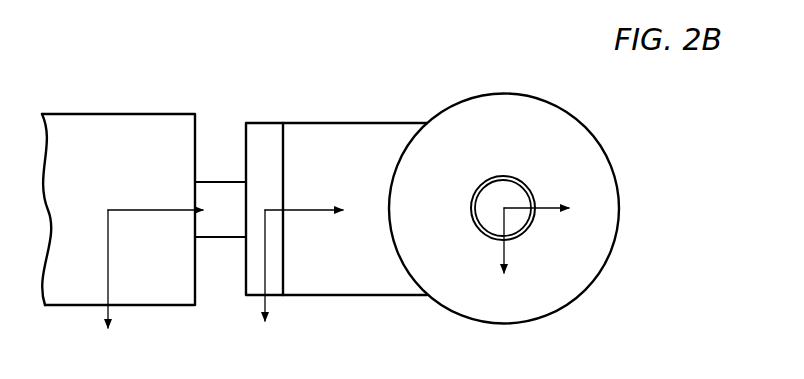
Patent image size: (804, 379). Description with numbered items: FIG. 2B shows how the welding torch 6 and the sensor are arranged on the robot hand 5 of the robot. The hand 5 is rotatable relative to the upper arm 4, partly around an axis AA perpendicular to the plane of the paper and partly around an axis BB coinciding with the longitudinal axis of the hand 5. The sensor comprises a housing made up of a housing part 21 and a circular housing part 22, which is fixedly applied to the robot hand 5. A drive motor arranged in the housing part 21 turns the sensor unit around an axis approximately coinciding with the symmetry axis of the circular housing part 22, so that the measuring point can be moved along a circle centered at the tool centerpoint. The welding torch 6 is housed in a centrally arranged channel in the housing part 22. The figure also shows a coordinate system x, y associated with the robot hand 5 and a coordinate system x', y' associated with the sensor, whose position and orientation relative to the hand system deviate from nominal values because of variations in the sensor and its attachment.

The upper arm 4 is at (98, 132).
The robot hand 5 is at (265, 133).
The housing part 21 is at (346, 140).
The circular housing part 22 is at (479, 123).
The welding torch 6 is at (507, 196).